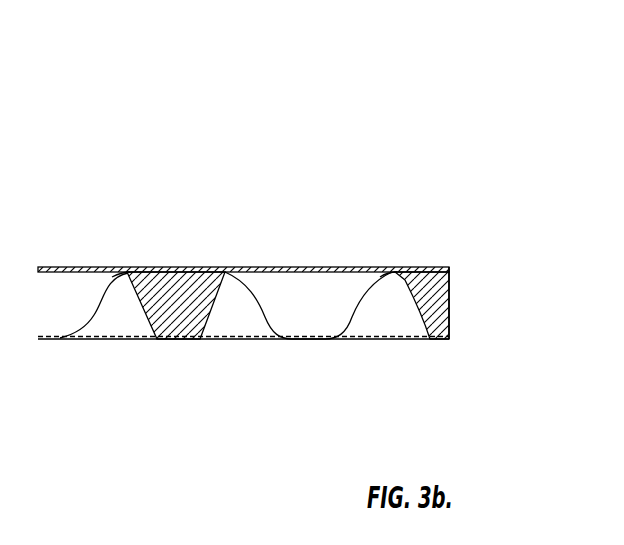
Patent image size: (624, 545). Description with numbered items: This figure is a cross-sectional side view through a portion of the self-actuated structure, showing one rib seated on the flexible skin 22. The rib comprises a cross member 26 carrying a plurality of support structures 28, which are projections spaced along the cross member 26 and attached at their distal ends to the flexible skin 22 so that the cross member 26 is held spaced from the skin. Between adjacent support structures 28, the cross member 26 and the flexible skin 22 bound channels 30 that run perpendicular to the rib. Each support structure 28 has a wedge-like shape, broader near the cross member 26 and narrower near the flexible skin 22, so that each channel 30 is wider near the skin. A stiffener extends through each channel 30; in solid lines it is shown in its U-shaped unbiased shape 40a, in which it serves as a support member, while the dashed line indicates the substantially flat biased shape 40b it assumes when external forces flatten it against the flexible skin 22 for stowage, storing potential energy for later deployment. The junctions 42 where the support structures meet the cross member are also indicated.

The flexible skin 22 is at (100, 349).
The cross member 26 is at (170, 271).
The support structures 28 is at (155, 279).
The channels 30 is at (402, 309).
The unbiased shape 40a is at (257, 294).
The biased shape 40b is at (258, 339).
The junction fillet 42 is at (232, 271).